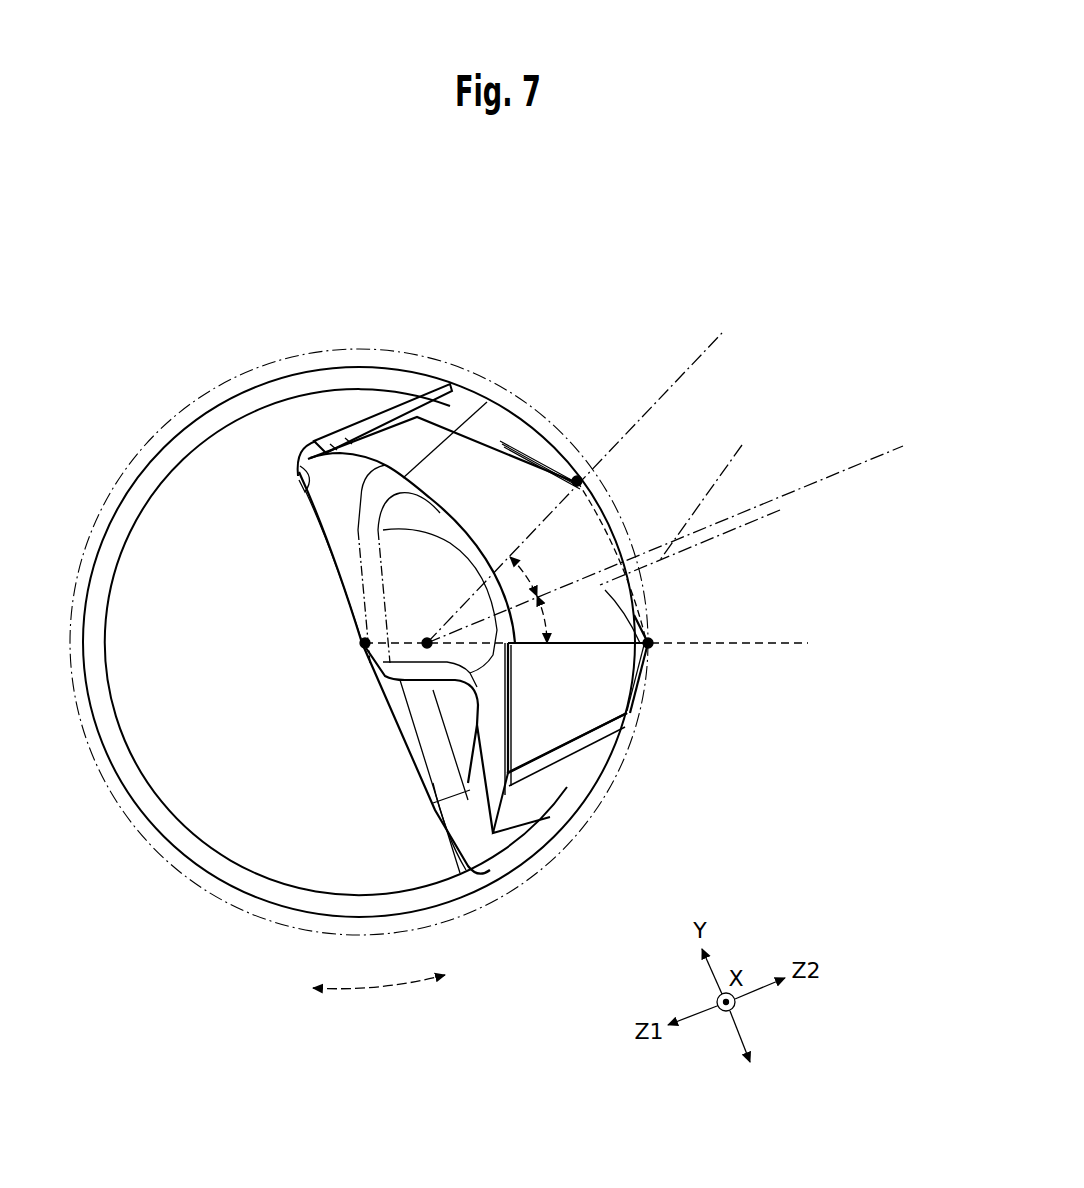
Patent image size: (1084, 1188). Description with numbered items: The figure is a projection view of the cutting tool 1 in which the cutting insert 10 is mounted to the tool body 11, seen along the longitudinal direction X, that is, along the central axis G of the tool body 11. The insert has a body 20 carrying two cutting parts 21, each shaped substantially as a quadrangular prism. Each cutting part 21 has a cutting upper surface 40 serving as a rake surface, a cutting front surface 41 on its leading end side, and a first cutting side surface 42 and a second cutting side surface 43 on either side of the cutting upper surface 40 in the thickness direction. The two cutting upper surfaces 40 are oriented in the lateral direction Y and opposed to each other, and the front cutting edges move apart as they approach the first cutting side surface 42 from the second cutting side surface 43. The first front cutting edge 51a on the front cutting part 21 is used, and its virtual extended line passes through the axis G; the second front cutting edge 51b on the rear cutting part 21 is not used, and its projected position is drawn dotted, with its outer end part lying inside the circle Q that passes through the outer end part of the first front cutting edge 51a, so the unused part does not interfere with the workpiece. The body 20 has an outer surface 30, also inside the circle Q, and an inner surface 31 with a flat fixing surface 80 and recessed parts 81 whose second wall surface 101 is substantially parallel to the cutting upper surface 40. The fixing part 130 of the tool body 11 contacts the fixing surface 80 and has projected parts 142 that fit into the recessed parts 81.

The cutting tool 1 is at (158, 385).
The tool body 11 is at (124, 472).
The cutting insert 10 is at (372, 430).
The fixing part 130 is at (313, 436).
The body 20 is at (478, 427).
The fixing surface 80 is at (340, 588).
The inner surface 31 is at (343, 594).
The cutting upper surface 40 is at (595, 478).
The first cutting side surface 42 is at (528, 455).
The cutting part 21 is at (547, 455).
The first front cutting edge 51a is at (620, 630).
The second front cutting edge 51b is at (627, 493).
The outer surface 30 is at (637, 722).
The cutting front surface 41 is at (623, 735).
The second cutting side surface 43 is at (495, 836).
The second wall surface 101 is at (450, 663).
The recessed part 81 is at (453, 750).
The projected part 142 is at (433, 783).